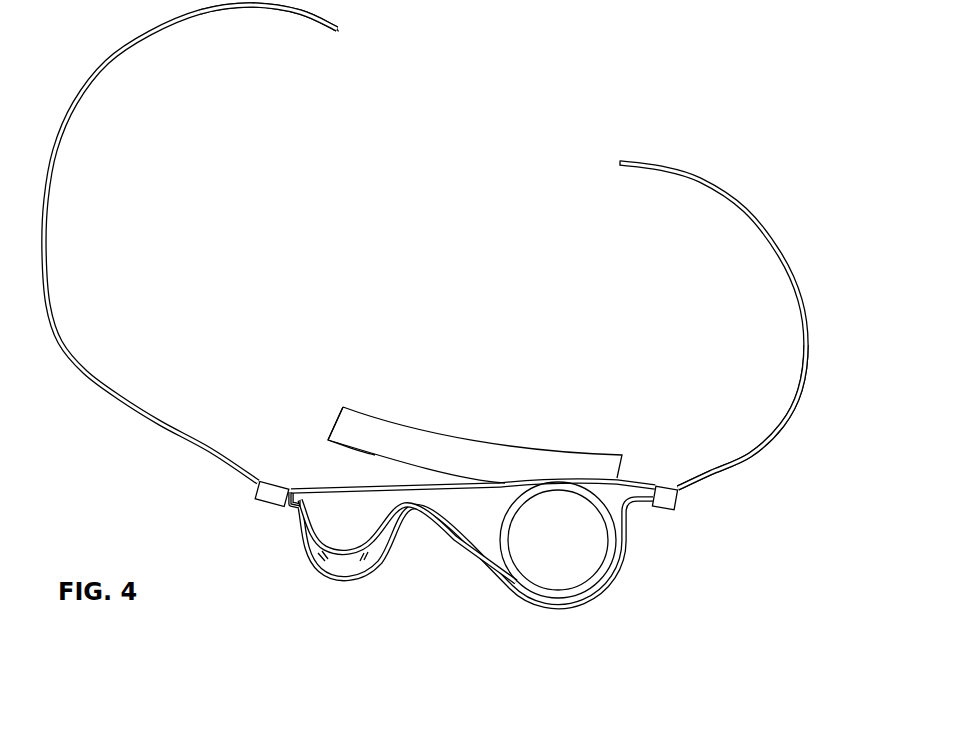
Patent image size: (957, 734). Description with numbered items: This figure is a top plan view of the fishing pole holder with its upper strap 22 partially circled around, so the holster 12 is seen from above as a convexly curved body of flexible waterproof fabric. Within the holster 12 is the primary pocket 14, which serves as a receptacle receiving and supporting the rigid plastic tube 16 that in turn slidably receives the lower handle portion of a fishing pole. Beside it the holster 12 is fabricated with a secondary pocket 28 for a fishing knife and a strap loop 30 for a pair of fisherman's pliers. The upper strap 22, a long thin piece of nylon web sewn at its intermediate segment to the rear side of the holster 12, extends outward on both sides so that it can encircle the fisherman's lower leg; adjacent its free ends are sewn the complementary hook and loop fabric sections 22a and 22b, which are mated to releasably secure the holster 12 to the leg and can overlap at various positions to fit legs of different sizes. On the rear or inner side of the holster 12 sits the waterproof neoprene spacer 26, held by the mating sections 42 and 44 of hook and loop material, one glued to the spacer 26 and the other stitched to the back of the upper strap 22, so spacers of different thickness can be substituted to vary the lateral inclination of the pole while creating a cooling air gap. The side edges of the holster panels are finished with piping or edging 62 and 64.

The holster 12 is at (466, 512).
The primary pocket 14 is at (460, 513).
The rigid plastic tube 16 is at (504, 513).
The upper strap 22 is at (107, 62).
The hook and loop fabric section 22a is at (200, 9).
The hook and loop fabric section 22b is at (773, 442).
The waterproof spacer 26 is at (457, 450).
The secondary pocket 28 is at (334, 520).
The strap loop 30 is at (355, 581).
The mating section of VELCRO material 42 is at (312, 490).
The mating section of VELCRO material 44 is at (340, 450).
The piping or edging 62 is at (677, 498).
The piping or edging 64 is at (256, 488).